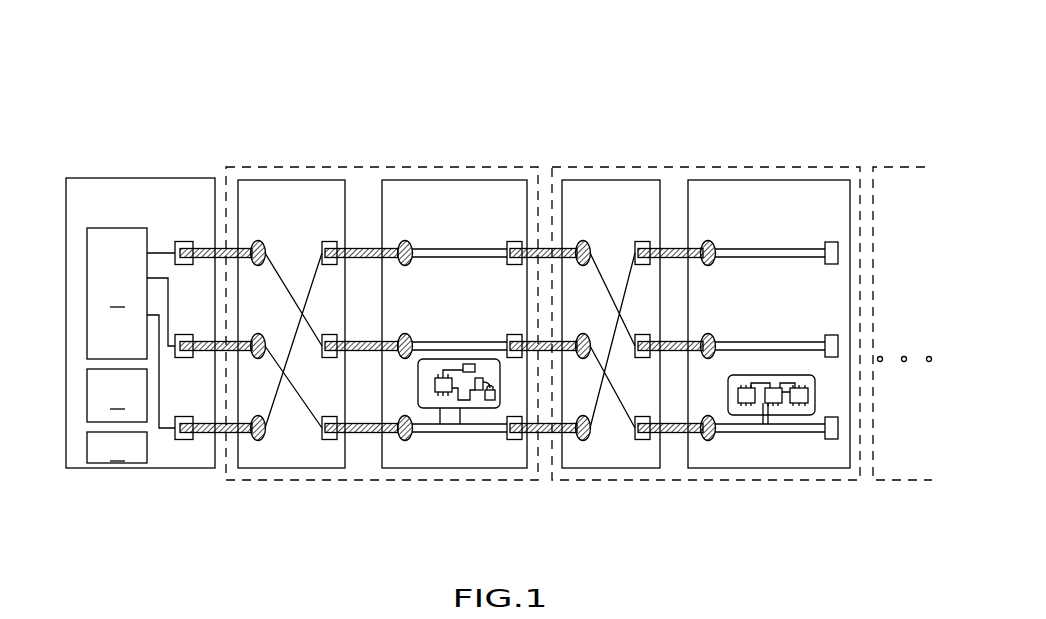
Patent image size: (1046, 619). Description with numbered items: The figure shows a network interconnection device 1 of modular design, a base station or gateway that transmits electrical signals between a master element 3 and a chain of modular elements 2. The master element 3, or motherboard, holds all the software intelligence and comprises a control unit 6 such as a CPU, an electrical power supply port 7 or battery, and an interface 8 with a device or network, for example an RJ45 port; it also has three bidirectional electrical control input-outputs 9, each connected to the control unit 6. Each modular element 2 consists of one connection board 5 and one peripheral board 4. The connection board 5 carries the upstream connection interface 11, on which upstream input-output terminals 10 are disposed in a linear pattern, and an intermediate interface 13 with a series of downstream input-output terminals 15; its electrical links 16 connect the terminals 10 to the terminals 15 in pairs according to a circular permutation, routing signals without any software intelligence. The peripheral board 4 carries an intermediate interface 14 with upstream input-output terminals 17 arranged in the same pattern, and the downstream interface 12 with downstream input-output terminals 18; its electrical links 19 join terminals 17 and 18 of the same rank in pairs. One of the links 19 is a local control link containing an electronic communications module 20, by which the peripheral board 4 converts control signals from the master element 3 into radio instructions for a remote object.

The network interconnection device 1 is at (150, 98).
The modular element 2 is at (461, 165).
The master element 3 is at (121, 176).
The peripheral board 4 is at (399, 216).
The connection board 5 is at (292, 206).
The control unit 6 is at (117, 293).
The electrical power supply port 7 is at (117, 395).
The interface 8 is at (117, 447).
The bidirectional electrical control input-output 9 is at (183, 241).
The upstream input-output terminal 10 is at (257, 241).
The upstream connection interface 11 is at (251, 153).
The downstream interface 12 is at (543, 157).
The intermediate interface 13 is at (320, 493).
The intermediate interface 14 is at (370, 493).
The downstream input-output terminal 15 is at (330, 241).
The electrical link 16 is at (300, 406).
The upstream input-output terminal 17 is at (410, 439).
The downstream input-output terminal 18 is at (512, 241).
The electrical link 19 is at (441, 248).
The electronic communications module 20 is at (433, 403).